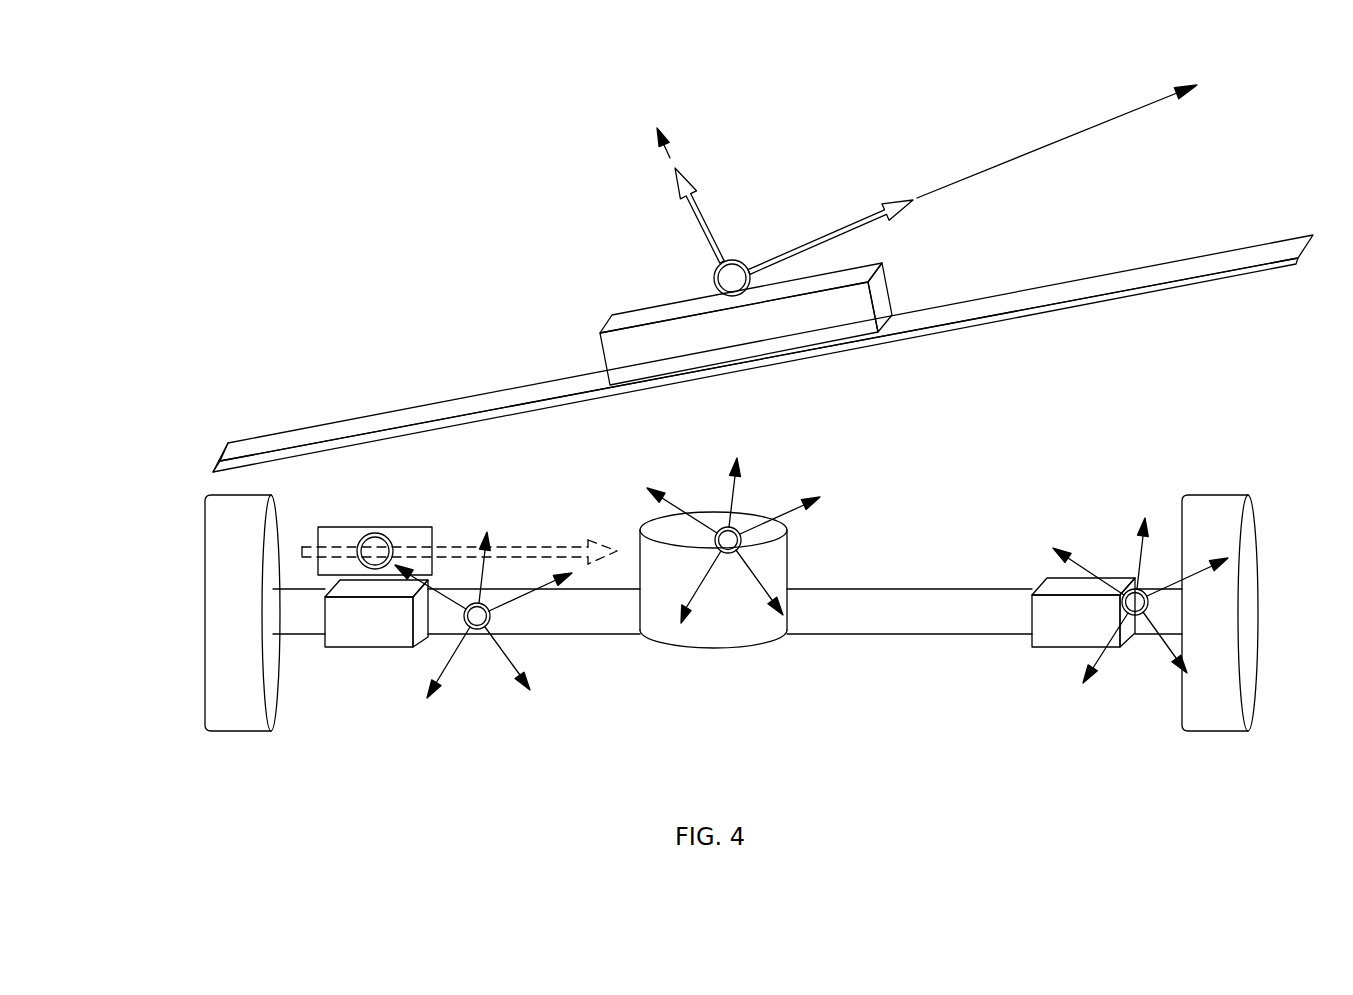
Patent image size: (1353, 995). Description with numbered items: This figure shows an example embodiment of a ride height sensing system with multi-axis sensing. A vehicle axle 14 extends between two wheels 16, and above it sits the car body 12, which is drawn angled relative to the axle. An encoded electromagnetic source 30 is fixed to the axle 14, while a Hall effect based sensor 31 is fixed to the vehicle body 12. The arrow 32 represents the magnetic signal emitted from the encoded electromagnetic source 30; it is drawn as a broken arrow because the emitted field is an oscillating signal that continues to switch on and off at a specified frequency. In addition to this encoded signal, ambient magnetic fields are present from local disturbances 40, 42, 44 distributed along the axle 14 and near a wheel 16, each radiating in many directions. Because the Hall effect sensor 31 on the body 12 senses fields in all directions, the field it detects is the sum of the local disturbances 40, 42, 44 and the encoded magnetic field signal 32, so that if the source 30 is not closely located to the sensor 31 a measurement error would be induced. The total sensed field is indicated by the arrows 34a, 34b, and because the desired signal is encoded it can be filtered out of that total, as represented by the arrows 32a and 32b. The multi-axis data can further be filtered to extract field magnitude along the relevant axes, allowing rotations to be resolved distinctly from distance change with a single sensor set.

The car body 12 is at (275, 442).
The vehicle axle 14 is at (931, 638).
The wheels 16 is at (205, 650).
The encoded electromagnetic source 30 is at (416, 530).
The Hall effect based sensor 31 is at (714, 284).
The magnetic signal 32 is at (541, 547).
The filtered encoded signal 32a is at (688, 212).
The filtered encoded signal 32b is at (846, 216).
The sensed magnetic field 34a is at (665, 156).
The sensed magnetic field 34b is at (1000, 166).
The local disturbance 40 is at (477, 630).
The local disturbance 42 is at (733, 556).
The local disturbance 44 is at (1135, 615).